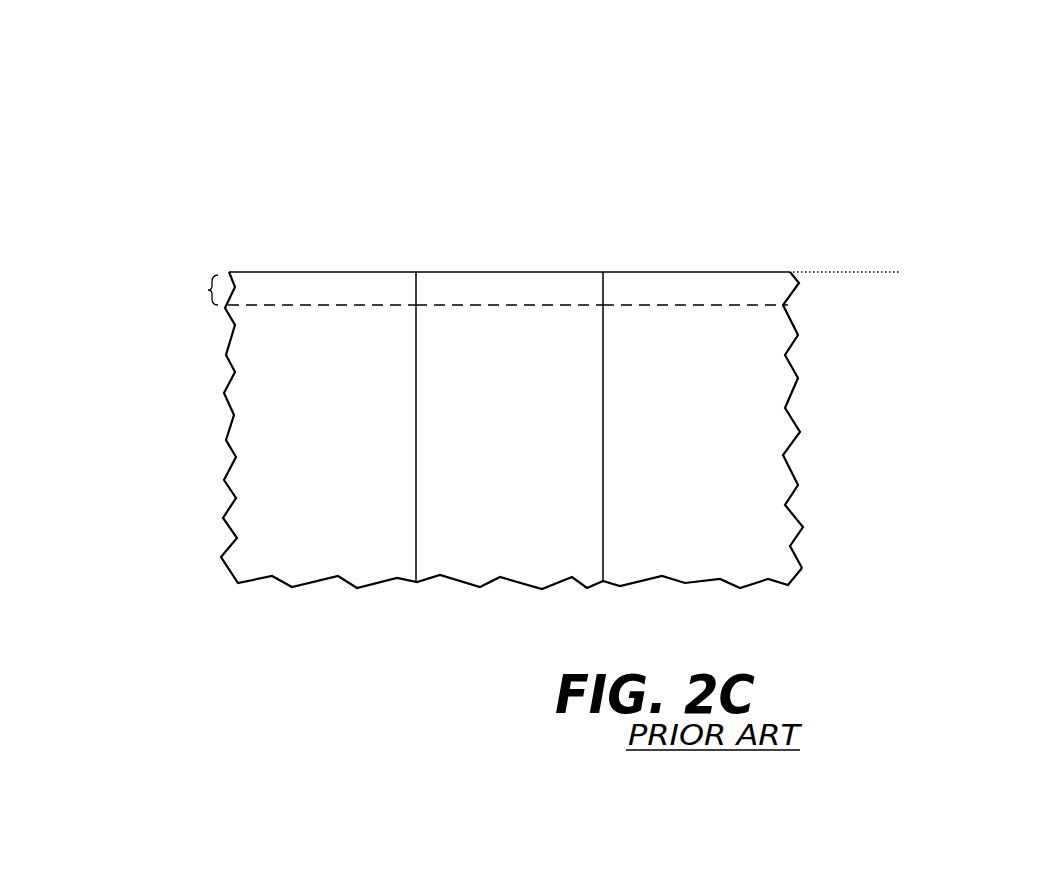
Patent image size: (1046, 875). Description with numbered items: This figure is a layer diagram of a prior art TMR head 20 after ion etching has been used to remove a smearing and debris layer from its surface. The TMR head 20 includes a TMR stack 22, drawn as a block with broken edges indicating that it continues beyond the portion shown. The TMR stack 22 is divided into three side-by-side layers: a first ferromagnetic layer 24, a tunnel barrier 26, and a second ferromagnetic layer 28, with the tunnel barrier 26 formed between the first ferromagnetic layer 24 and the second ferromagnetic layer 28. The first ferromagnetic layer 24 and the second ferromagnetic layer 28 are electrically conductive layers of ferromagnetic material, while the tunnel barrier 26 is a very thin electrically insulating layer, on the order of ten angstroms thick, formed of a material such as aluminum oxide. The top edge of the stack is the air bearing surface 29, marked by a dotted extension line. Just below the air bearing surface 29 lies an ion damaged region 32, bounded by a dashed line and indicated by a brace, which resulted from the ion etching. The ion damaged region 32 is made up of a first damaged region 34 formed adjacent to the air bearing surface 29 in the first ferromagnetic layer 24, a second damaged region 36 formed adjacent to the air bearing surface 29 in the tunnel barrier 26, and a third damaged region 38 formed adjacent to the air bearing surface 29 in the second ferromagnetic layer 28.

The TMR head 20 is at (632, 118).
The TMR stack 22 is at (193, 372).
The first ferromagnetic layer 24 is at (336, 381).
The tunnel barrier 26 is at (530, 381).
The second ferromagnetic layer 28 is at (718, 381).
The air bearing surface 29 is at (564, 257).
The ion damaged region 32 is at (128, 277).
The first damaged region 34 is at (336, 301).
The second damaged region 36 is at (530, 301).
The third damaged region 38 is at (718, 301).